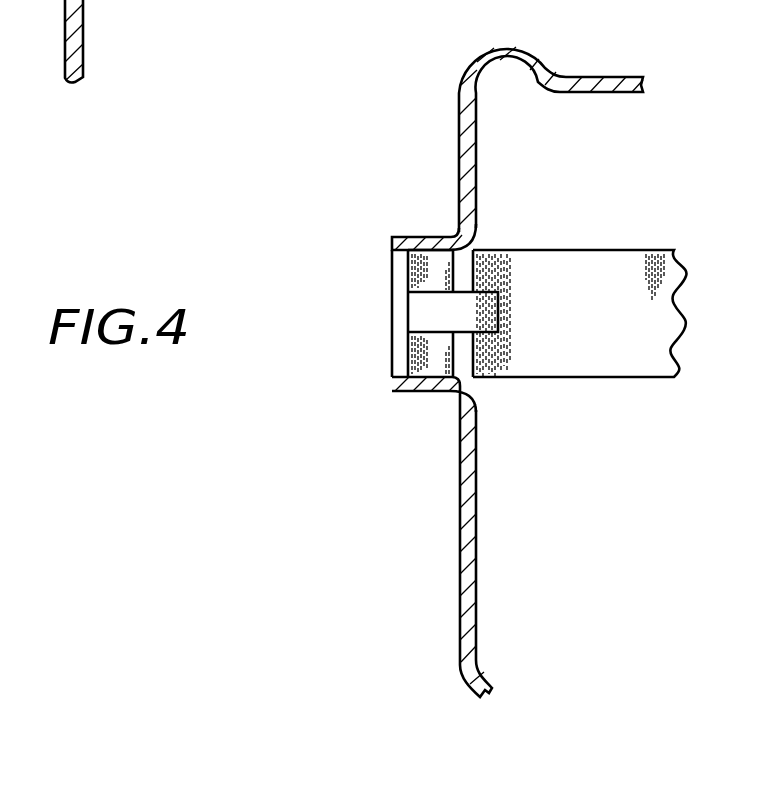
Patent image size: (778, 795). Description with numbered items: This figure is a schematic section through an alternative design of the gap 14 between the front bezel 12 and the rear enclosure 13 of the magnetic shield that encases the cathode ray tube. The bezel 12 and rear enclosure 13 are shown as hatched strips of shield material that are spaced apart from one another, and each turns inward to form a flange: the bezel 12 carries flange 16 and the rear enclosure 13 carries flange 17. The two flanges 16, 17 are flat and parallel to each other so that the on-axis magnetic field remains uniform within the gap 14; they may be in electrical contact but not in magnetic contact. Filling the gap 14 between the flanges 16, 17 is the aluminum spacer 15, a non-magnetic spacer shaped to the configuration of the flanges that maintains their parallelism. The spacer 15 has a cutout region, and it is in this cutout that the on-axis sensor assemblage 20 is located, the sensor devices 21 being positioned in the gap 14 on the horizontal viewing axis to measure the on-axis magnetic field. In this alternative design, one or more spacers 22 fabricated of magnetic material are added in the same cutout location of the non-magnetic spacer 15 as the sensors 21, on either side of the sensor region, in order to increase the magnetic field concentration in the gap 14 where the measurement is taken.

The front bezel 12 is at (560, 71).
The rear enclosure 13 is at (460, 597).
The gap 14 is at (392, 330).
The aluminum spacer 15 is at (580, 357).
The flange 16 is at (432, 237).
The flange 17 is at (420, 393).
The on-axis sensor assemblage 20 is at (378, 309).
The sensor device 21 is at (478, 316).
The magnetic spacer 22 is at (412, 270).